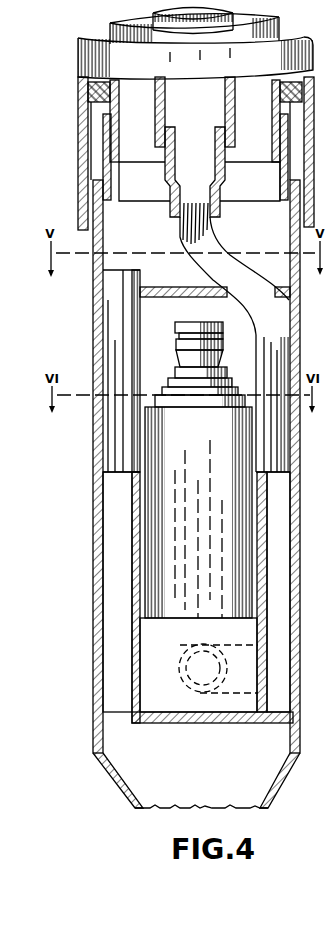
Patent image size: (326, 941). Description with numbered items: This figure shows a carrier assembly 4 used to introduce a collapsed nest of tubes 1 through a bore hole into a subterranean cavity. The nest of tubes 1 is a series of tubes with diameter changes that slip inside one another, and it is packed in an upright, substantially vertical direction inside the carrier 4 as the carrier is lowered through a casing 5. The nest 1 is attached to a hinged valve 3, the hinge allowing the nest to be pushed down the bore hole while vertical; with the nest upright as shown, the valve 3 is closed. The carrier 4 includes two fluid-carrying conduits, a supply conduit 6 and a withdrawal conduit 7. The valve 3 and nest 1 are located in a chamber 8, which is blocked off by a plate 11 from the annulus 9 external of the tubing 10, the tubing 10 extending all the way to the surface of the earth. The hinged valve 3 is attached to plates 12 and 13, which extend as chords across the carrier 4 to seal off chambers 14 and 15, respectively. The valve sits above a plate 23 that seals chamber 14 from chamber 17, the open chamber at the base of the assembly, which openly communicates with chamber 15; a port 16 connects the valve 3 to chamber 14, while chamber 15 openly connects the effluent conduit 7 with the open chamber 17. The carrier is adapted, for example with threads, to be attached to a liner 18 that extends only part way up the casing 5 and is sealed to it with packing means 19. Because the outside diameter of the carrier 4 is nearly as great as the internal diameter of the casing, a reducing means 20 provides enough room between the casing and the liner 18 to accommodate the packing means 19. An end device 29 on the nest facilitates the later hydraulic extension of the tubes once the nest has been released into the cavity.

The nest of tubes 1 is at (190, 448).
The hinged valve 3 is at (152, 680).
The carrier assembly 4 is at (95, 496).
The casing 5 is at (78, 165).
The supply conduit 6 is at (240, 296).
The withdrawal conduit 7 is at (116, 318).
The chamber 8 is at (191, 315).
The annulus 9 is at (240, 193).
The tubing 10 is at (156, 105).
The plate 11 is at (183, 287).
The plate 12 is at (268, 528).
The plate 13 is at (132, 535).
The chamber 14 is at (272, 593).
The chamber 15 is at (111, 588).
The port 16 is at (194, 647).
The chamber 17 is at (193, 780).
The liner 18 is at (120, 142).
The packing means 19 is at (86, 93).
The reducing means 20 is at (112, 180).
The plate 23 is at (238, 727).
The end device 29 is at (177, 327).